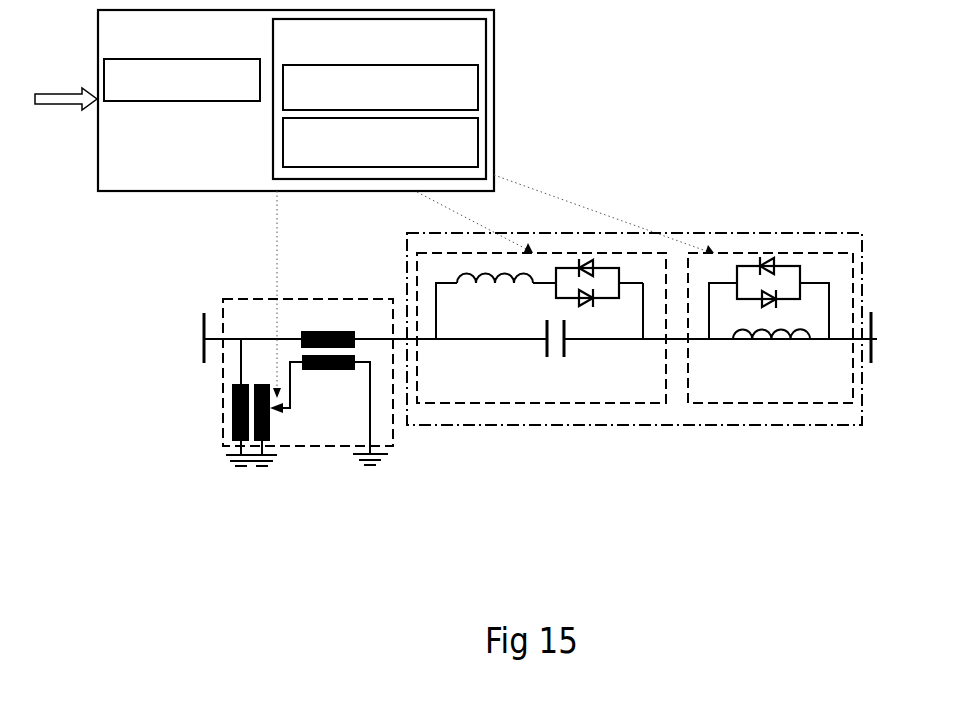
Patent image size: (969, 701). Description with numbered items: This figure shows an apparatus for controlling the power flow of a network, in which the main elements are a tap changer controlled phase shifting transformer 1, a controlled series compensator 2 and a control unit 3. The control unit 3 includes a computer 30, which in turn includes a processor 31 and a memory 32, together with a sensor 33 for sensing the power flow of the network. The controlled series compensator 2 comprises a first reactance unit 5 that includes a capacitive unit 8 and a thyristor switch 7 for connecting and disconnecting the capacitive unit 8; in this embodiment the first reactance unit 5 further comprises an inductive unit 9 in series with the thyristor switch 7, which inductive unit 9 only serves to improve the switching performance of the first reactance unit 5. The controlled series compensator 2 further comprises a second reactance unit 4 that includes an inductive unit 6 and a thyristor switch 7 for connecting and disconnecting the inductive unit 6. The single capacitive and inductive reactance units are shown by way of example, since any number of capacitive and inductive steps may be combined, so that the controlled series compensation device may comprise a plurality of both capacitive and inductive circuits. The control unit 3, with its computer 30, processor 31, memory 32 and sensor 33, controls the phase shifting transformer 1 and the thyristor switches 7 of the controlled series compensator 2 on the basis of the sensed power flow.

The tap changer controlled phase shifting transformer 1 is at (290, 299).
The controlled series compensator 2 is at (673, 232).
The control unit 3 is at (374, 204).
The second reactance unit 4 is at (770, 366).
The first reactance unit 5 is at (541, 366).
The inductive unit 6 is at (735, 342).
The thyristor switch 7 is at (605, 267).
The capacitive unit 8 is at (567, 348).
The inductive unit 9 is at (477, 285).
The computer 30 is at (379, 99).
The processor 31 is at (380, 87).
The memory 32 is at (380, 142).
The sensor 33 is at (182, 80).